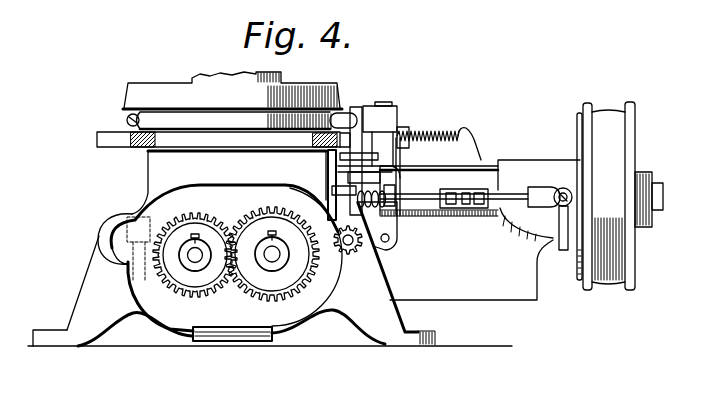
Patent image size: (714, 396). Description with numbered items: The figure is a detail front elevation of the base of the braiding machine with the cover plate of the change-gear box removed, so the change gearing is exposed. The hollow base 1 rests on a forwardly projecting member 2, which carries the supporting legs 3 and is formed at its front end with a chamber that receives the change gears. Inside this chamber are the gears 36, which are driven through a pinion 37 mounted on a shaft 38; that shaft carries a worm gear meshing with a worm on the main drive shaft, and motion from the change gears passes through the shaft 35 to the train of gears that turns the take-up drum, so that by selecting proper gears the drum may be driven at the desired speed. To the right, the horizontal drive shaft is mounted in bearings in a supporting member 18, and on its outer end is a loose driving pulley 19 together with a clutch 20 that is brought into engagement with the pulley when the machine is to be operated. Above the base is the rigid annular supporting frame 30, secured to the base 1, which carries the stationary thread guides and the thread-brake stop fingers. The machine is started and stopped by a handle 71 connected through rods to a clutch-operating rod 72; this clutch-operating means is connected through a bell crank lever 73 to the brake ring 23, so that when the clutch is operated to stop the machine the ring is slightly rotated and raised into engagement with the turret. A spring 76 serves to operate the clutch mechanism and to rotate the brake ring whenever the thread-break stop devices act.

The base 1 is at (151, 181).
The forwardly projecting member 2 is at (164, 328).
The supporting legs 3 is at (58, 330).
The supporting member 18 is at (479, 291).
The driving pulley 19 is at (607, 111).
The clutch 20 is at (578, 126).
The brake-ring 23 is at (342, 113).
The annular supporting frame 30 is at (109, 131).
The shaft 35 is at (188, 258).
The gears 36 is at (272, 308).
The pinion 37 is at (360, 247).
The shaft 38 is at (347, 252).
The handle 71 is at (337, 184).
The clutch-operating rod 72 is at (500, 208).
The bell crank lever 73 is at (365, 113).
The spring 76 is at (421, 138).